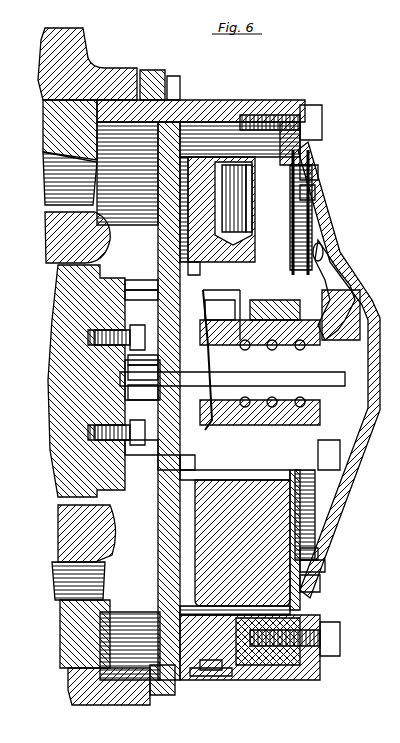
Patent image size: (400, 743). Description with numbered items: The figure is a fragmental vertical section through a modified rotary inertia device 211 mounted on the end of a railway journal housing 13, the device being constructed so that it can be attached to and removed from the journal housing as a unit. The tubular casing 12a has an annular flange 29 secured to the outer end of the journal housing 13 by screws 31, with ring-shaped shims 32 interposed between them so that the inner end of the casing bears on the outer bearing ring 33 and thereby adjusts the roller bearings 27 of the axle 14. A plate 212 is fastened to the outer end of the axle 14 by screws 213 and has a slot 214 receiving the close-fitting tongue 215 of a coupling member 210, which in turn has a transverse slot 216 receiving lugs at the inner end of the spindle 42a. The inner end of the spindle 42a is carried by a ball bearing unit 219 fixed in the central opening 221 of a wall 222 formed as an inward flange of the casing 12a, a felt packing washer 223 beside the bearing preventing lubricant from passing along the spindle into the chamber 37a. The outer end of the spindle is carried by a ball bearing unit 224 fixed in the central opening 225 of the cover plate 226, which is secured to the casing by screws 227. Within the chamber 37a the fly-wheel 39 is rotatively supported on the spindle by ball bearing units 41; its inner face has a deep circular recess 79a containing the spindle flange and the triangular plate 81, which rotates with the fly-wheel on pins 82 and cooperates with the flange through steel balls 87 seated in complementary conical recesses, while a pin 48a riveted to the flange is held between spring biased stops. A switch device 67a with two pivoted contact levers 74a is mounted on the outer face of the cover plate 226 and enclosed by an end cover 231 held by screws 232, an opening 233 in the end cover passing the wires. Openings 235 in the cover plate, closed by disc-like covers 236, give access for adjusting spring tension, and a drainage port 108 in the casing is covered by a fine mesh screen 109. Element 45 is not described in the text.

The journal housing 13 is at (82, 44).
The outer bearing ring 33 is at (45, 125).
The roller bearings 27 is at (50, 170).
The axle 14 is at (62, 288).
The shims 32 is at (143, 72).
The screws 31 is at (176, 92).
The tubular casing 12a is at (215, 103).
The spindle 42a is at (155, 401).
The circular recess 79a is at (223, 211).
The pins 82 is at (247, 224).
The triangular plate 81 is at (242, 224).
The lever 45 is at (202, 262).
The screws 227 is at (322, 122).
The cover plate 226 is at (300, 150).
The disc-like covers 236 is at (312, 210).
The screws 232 is at (318, 172).
The openings 235 is at (315, 194).
The end cover 231 is at (325, 565).
The fly-wheel 39 is at (300, 600).
The opening 233 is at (323, 252).
The contact levers 74a is at (350, 282).
The switch device 67a is at (360, 470).
The coupling member 210 is at (62, 428).
The ball bearing units 41 is at (260, 372).
The steel ball 87 is at (227, 310).
The central opening 225 is at (275, 310).
The packing washer 223 is at (116, 328).
The ball bearing unit 219 is at (116, 440).
The transverse slot 216 is at (130, 360).
The tongue 215 is at (130, 372).
The slot 214 is at (135, 395).
The plate 212 is at (141, 281).
The screws 213 is at (141, 295).
The central opening 221 is at (180, 455).
The pin 48a is at (164, 471).
The wall 222 is at (165, 495).
The ball bearing unit 224 is at (242, 543).
The chamber 37a is at (258, 668).
The rotary inertia device 211 is at (290, 668).
The annular flange 29 is at (170, 698).
The drainage port 108 is at (218, 668).
The fine mesh screen 109 is at (212, 676).